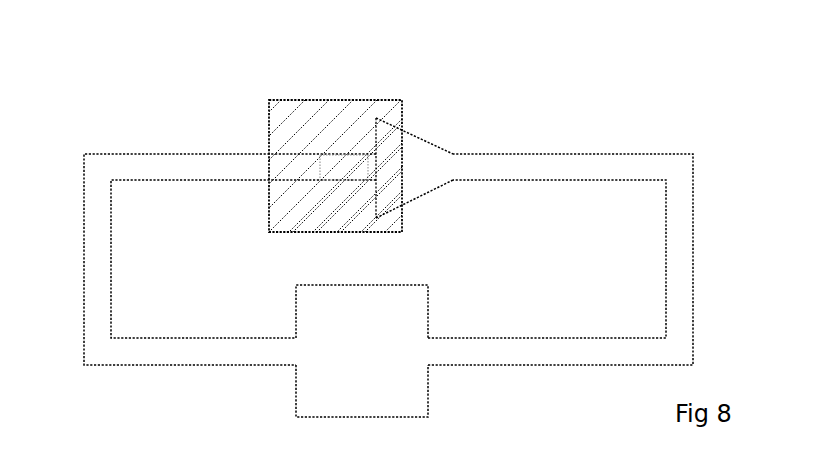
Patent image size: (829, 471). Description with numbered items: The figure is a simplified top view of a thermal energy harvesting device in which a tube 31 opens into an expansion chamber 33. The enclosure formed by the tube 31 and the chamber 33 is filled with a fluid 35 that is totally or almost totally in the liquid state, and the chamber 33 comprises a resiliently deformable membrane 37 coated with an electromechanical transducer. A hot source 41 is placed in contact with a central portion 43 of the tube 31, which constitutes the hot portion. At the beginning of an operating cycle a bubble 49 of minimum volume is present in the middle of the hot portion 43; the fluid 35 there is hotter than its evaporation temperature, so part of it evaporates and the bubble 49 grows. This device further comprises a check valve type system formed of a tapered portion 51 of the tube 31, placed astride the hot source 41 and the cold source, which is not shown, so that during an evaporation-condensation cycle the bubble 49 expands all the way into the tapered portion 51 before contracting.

The tube 31 is at (82, 222).
The expansion chamber 33 is at (372, 420).
The fluid 35 is at (99, 289).
The resiliently deformable membrane 37 is at (314, 387).
The hot source 41 is at (352, 120).
The central portion 43 is at (300, 151).
The bubble 49 is at (350, 171).
The tapered portion 51 is at (432, 134).